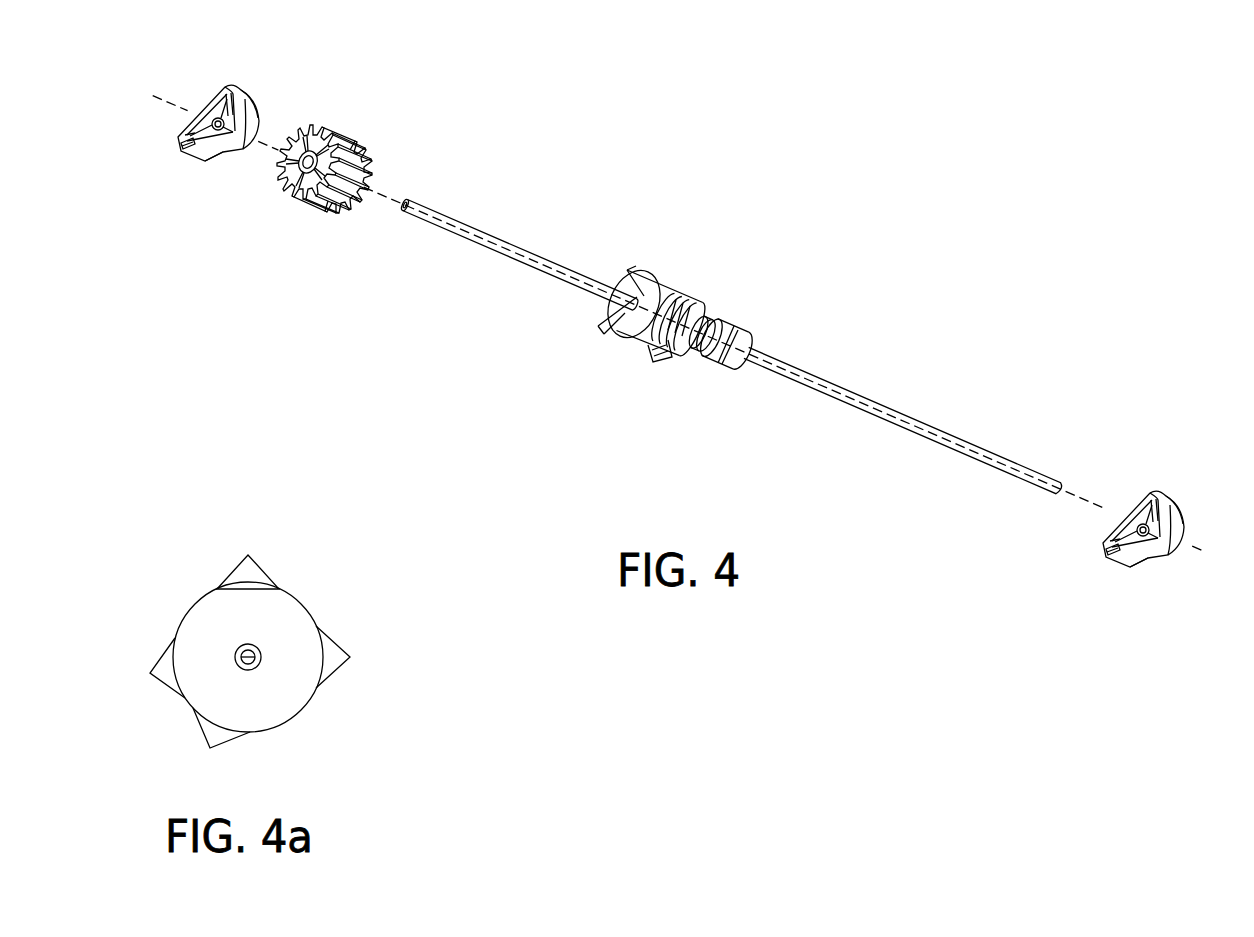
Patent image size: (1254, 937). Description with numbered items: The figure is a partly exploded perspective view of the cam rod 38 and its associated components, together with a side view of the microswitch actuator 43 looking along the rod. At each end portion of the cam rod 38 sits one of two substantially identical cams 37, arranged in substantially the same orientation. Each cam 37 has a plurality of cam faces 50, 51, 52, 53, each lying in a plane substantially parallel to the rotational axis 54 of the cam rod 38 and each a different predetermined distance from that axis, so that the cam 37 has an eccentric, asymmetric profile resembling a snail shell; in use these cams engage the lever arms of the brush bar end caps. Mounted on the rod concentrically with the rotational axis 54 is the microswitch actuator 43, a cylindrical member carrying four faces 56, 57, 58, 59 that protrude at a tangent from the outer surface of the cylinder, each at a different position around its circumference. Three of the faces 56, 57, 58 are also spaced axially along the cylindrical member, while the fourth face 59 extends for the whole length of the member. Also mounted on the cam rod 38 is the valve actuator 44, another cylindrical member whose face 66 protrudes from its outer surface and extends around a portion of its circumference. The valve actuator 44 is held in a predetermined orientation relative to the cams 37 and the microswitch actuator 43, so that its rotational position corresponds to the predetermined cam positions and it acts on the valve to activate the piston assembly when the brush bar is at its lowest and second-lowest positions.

In FIG. 4, the cam 37 is at (207, 88).
In FIG. 4, the cam rod 38 is at (905, 438).
In FIG. 4a, the cam rod 38 is at (252, 668).
In FIG. 4, the microswitch actuator 43 is at (613, 347).
In FIG. 4a, the microswitch actuator 43 is at (162, 608).
In FIG. 4, the valve actuator 44 is at (750, 337).
In FIG. 4, the cam face 50 is at (238, 154).
In FIG. 4, the cam face 51 is at (262, 106).
In FIG. 4, the cam face 52 is at (186, 128).
In FIG. 4, the cam face 53 is at (182, 146).
In FIG. 4, the rotational axis 54 is at (385, 205).
In FIG. 4a, the rotational axis 54 is at (262, 660).
In FIG. 4, the face 56 is at (627, 269).
In FIG. 4a, the face 56 is at (268, 565).
In FIG. 4, the face 57 is at (681, 290).
In FIG. 4a, the face 57 is at (347, 663).
In FIG. 4, the face 58 is at (665, 362).
In FIG. 4a, the face 58 is at (200, 730).
In FIG. 4, the face 59 is at (598, 326).
In FIG. 4a, the face 59 is at (150, 668).
In FIG. 4, the face 66 is at (712, 320).